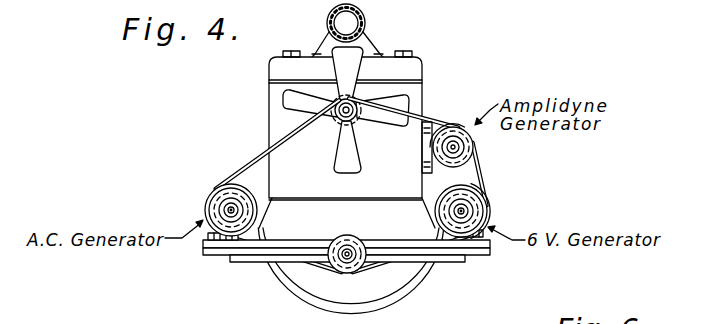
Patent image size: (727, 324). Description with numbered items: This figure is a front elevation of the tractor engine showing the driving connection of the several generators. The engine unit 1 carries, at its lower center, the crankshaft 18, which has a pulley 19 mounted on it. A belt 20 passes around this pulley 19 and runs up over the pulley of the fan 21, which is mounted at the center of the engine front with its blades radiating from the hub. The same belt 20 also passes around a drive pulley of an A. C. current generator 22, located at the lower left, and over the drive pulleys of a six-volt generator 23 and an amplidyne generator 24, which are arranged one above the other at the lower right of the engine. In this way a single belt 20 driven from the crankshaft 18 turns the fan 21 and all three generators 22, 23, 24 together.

The engine-generator unit body 1 is at (266, 69).
The crankshaft 18 is at (363, 288).
The pulley 19 is at (364, 243).
The belt 20 is at (320, 267).
The fan 21 is at (284, 98).
The A. C. current generator 22 is at (206, 208).
The 6 v. generator 23 is at (485, 206).
The amplidyne generator 24 is at (475, 150).